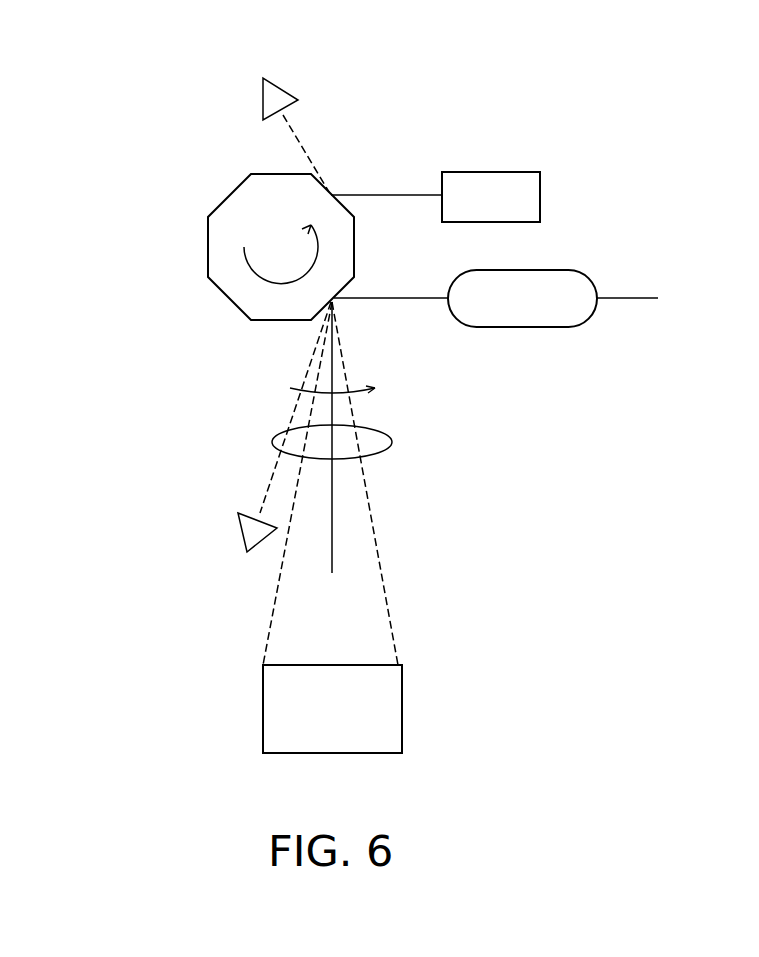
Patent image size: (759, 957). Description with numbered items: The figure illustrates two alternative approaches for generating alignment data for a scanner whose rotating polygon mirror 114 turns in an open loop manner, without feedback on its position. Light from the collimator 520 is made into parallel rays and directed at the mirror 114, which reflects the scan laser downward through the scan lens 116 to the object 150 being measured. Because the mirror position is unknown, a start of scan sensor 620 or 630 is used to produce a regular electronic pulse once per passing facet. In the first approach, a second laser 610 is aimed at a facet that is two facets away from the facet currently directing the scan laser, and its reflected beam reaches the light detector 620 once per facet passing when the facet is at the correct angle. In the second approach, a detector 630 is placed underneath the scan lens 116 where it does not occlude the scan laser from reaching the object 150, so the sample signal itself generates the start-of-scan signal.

The rotating polygon mirror 114 is at (208, 241).
The scan lens 116 is at (392, 442).
The object 150 is at (403, 710).
The collimator 520 is at (522, 270).
The second laser 610 is at (490, 172).
The light detector 620 is at (280, 83).
The detector 630 is at (238, 528).